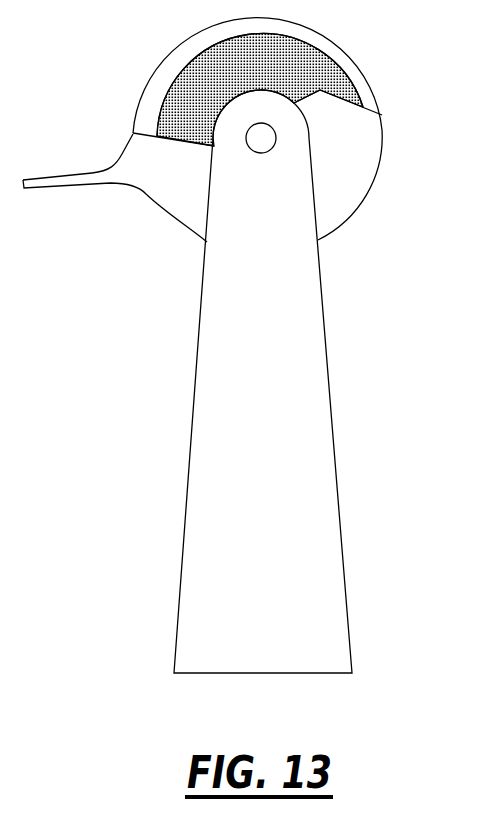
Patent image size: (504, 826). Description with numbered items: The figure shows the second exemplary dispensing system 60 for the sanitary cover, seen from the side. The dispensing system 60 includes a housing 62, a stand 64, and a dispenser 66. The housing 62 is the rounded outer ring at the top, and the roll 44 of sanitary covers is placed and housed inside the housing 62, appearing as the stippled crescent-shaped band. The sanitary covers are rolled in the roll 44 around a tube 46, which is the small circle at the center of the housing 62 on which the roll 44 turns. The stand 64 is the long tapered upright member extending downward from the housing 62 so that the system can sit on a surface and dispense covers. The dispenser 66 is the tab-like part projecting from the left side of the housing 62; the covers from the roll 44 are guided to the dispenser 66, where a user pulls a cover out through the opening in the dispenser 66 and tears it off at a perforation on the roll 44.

The second exemplary dispensing system 60 is at (400, 83).
The housing 62 is at (380, 158).
The roll 44 is at (310, 44).
The stand 64 is at (332, 398).
The tube 46 is at (262, 153).
The dispenser 66 is at (48, 177).